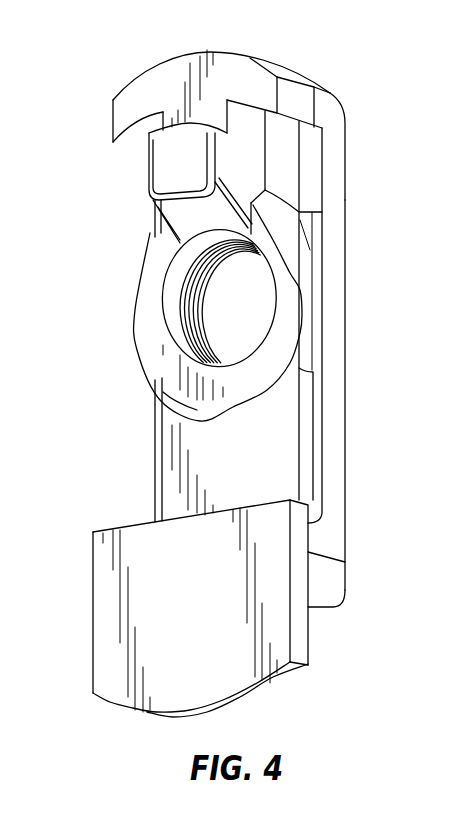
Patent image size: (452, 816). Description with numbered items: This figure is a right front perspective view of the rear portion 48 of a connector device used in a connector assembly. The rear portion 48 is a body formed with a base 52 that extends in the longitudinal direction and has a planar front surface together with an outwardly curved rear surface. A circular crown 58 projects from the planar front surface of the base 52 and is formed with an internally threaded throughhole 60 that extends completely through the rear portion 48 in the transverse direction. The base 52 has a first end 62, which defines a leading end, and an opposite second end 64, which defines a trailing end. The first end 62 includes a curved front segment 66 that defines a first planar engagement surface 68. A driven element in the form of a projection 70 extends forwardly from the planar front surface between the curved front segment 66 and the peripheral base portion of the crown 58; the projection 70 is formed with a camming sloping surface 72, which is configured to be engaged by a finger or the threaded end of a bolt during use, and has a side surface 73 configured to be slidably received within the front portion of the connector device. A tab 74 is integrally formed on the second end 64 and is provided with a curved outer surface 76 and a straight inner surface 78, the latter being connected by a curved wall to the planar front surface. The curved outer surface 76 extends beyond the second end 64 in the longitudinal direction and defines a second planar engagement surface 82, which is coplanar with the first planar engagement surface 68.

The rear portion 48 is at (258, 40).
The base 52 is at (335, 276).
The circular crown 58 is at (172, 401).
The internally threaded throughhole 60 is at (190, 313).
The first end 62 is at (331, 94).
The second end 64 is at (330, 605).
The curved front segment 66 is at (289, 76).
The first planar engagement surface 68 is at (152, 88).
The projection 70 is at (177, 162).
The camming sloping surface 72 is at (180, 237).
The side surface 73 is at (243, 175).
The tab 74 is at (298, 542).
The curved outer surface 76 is at (272, 685).
The straight inner surface 78 is at (118, 527).
The second planar engagement surface 82 is at (190, 682).